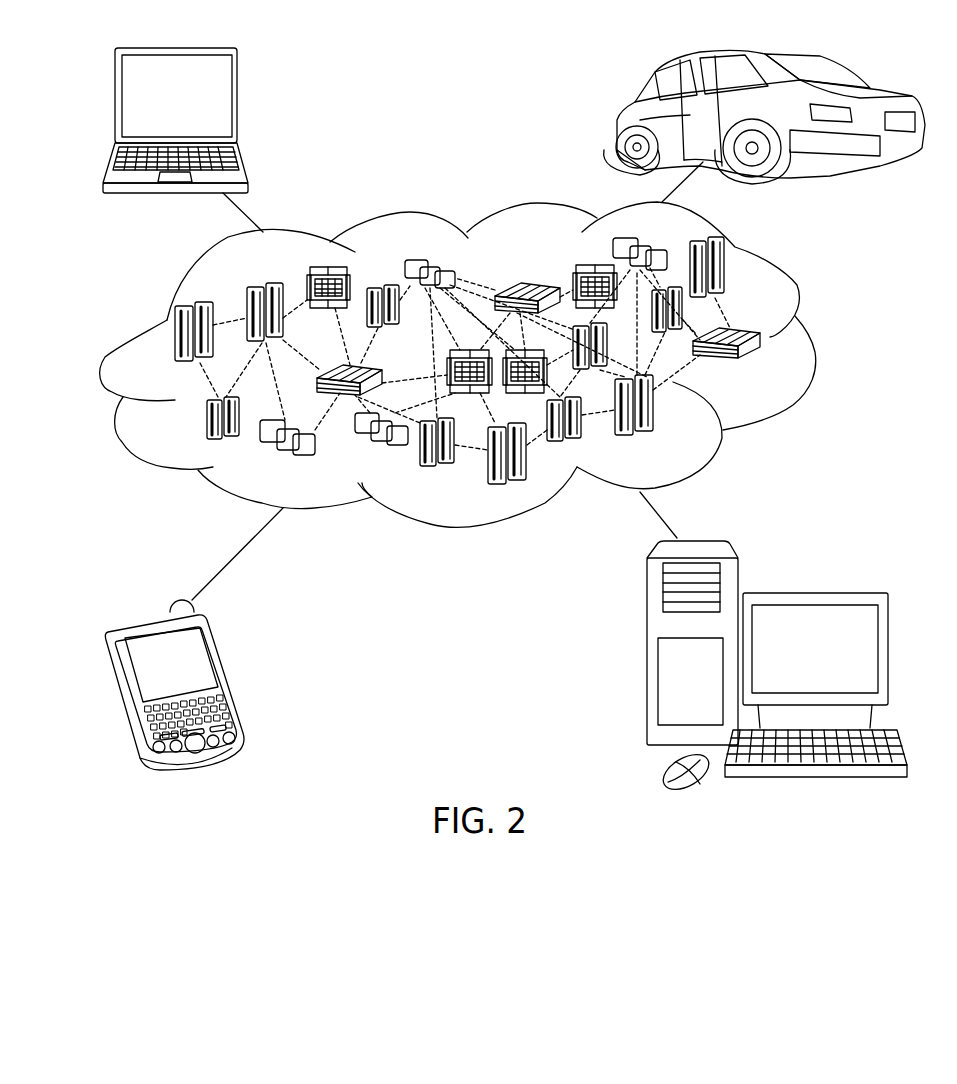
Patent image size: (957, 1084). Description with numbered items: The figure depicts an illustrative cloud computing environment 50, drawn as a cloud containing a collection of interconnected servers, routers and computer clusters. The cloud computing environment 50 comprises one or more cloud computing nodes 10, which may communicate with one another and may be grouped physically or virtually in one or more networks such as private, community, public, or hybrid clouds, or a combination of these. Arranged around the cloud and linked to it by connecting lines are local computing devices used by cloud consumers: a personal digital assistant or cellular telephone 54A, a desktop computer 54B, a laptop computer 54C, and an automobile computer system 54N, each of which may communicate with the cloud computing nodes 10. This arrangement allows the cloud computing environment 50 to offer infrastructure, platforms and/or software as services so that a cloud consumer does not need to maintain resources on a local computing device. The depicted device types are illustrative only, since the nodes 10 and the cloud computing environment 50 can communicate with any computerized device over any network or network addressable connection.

The cloud computing node 10 is at (833, 334).
The cloud computing environment 50 is at (481, 364).
The personal digital assistant or cellular telephone 54A is at (230, 675).
The desktop computer 54B is at (812, 593).
The laptop computer 54C is at (248, 100).
The automobile computer system 54N is at (620, 118).